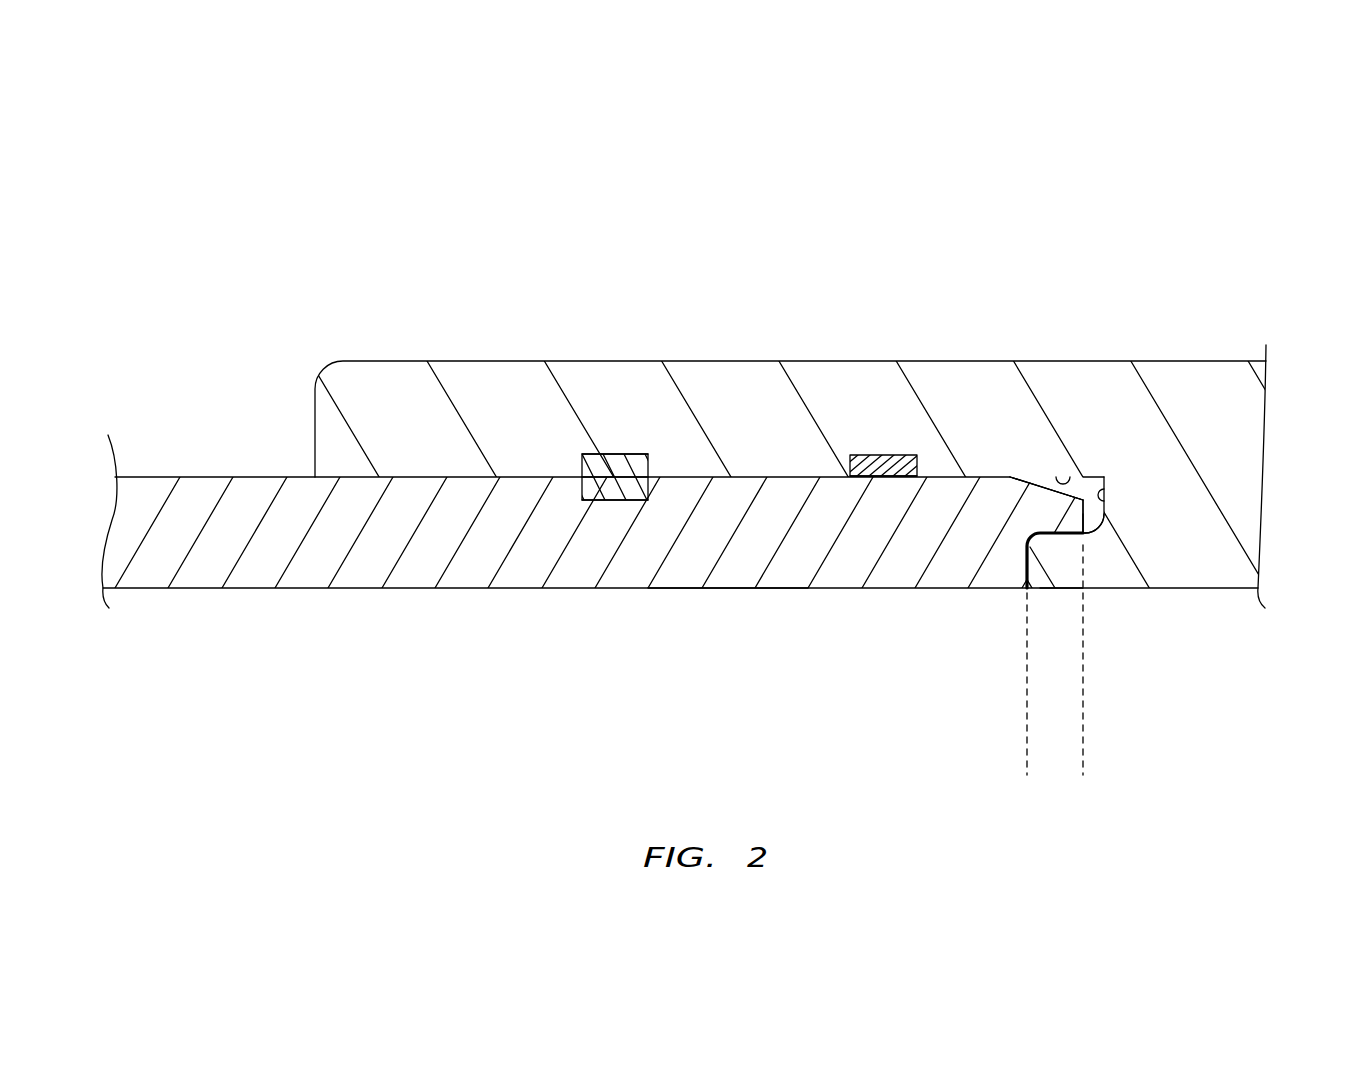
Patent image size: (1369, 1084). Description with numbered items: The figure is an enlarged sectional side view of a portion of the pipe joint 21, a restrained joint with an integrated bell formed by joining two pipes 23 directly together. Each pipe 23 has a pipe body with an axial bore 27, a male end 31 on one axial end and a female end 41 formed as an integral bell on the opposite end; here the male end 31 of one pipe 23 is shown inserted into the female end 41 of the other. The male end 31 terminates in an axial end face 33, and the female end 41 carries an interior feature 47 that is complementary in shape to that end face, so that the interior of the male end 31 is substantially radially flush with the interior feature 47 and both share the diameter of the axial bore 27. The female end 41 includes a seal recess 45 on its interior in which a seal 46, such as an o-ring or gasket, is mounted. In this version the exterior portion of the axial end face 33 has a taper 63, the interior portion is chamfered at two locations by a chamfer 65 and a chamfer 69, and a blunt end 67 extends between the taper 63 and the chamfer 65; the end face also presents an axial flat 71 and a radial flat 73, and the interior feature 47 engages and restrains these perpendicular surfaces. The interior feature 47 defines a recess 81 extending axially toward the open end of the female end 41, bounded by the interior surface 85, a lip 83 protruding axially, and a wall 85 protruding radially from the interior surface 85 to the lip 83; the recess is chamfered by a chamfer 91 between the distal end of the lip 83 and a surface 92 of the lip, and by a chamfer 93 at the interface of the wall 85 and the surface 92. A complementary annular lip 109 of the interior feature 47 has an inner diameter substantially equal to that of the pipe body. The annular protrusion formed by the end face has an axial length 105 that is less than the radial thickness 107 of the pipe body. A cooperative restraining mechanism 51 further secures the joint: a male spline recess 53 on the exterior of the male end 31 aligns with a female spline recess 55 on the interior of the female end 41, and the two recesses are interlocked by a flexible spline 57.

The pipe joint 21 is at (1178, 150).
The pipe 23 is at (182, 490).
The axial bore 27 is at (410, 610).
The male end 31 is at (697, 573).
The axial end face 33 is at (1090, 477).
The female end 41 is at (385, 378).
The seal recess 45 is at (860, 455).
The seal 46 is at (903, 463).
The interior feature 47 is at (1058, 520).
The cooperative restraining mechanism 51 is at (635, 441).
The male spline recess 53 is at (598, 454).
The female spline recess 55 is at (600, 471).
The flexible spline 57 is at (632, 478).
The taper 63 is at (1081, 473).
The chamfer 65 is at (1058, 536).
The blunt end 67 is at (1112, 520).
The chamfer 69 is at (1097, 545).
The axial flat 71 is at (1088, 540).
The radial flat 73 is at (1030, 580).
The recess 81 is at (1100, 477).
The lip 83 is at (1052, 578).
The interior surface 85 is at (1072, 477).
The chamfer 91 is at (1045, 525).
The surface 92 is at (1024, 545).
The chamfer 93 is at (1031, 497).
The axial length 105 is at (995, 772).
The radial thickness 107 is at (218, 410).
The annular lip 109 is at (1049, 582).